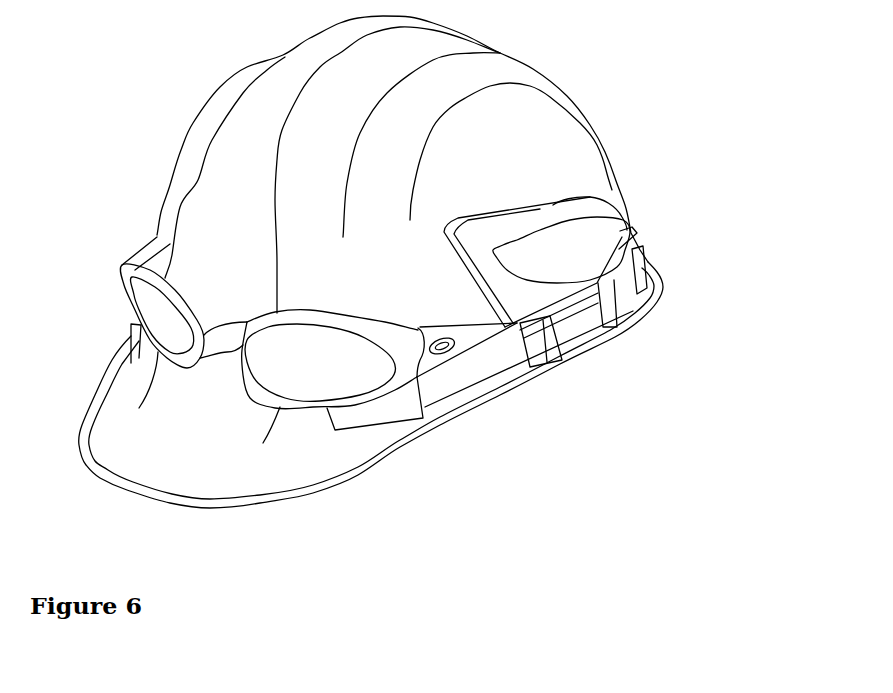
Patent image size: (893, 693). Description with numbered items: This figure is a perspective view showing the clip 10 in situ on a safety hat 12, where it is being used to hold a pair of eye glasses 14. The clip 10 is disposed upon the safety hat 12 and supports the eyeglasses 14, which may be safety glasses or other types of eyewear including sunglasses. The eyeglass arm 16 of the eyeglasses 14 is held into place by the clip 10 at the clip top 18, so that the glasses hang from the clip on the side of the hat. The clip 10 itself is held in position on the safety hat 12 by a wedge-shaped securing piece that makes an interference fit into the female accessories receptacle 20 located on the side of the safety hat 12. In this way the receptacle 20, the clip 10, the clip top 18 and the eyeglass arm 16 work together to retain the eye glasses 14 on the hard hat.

The clip 10 is at (543, 350).
The safety hat 12 is at (556, 141).
The eye glasses 14 is at (432, 358).
The eyeglass arm 16 is at (535, 347).
The clip top 18 is at (513, 245).
The female accessories receptacle 20 is at (577, 332).